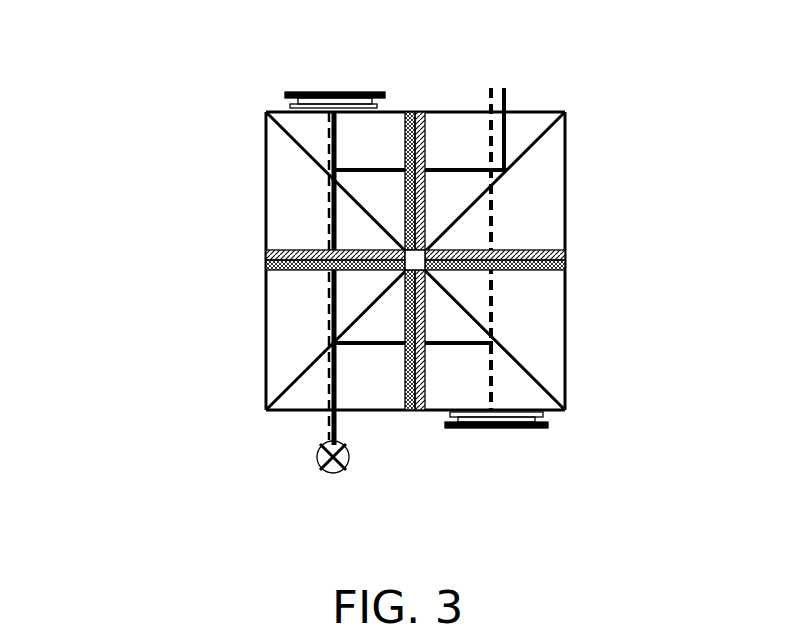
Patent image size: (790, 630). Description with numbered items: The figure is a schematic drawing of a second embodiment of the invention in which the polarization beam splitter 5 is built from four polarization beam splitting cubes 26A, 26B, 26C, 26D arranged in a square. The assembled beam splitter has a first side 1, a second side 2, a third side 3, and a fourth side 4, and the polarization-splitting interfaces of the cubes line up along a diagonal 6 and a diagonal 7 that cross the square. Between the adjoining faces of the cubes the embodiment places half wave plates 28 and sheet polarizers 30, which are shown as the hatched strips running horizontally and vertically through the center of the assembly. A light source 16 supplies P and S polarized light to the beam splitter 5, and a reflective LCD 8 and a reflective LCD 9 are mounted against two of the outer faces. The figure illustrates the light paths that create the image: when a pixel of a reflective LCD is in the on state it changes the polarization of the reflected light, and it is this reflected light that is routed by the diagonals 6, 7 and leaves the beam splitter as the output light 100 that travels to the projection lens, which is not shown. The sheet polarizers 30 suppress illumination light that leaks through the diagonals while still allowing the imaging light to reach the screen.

The first side of polarization beam splitter 1 is at (300, 412).
The second side of polarization beam splitter 2 is at (540, 111).
The third side of polarization beam splitter 3 is at (267, 193).
The fourth side of polarization beam splitter 4 is at (565, 320).
The polarization beam splitter 5 is at (142, 157).
The diagonal of polarization beam splitter 6 is at (310, 364).
The diagonal of polarization beam splitter 7 is at (293, 141).
The reflective LCD 8 is at (510, 430).
The reflective LCD 9 is at (345, 90).
The light source 16 is at (330, 476).
The polarization beam splitting cube 26A is at (326, 329).
The polarization beam splitting cube 26B is at (327, 213).
The polarization beam splitting cube 26C is at (556, 329).
The polarization beam splitting cube 26D is at (556, 211).
The half wave plate 28 is at (420, 111).
The sheet polarizer 30 is at (412, 111).
The output light to projection lens 100 is at (513, 82).